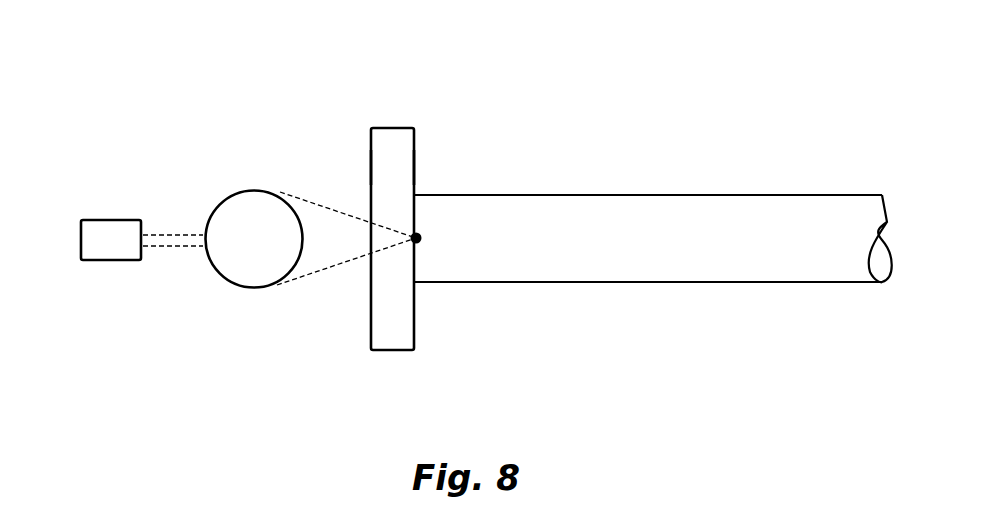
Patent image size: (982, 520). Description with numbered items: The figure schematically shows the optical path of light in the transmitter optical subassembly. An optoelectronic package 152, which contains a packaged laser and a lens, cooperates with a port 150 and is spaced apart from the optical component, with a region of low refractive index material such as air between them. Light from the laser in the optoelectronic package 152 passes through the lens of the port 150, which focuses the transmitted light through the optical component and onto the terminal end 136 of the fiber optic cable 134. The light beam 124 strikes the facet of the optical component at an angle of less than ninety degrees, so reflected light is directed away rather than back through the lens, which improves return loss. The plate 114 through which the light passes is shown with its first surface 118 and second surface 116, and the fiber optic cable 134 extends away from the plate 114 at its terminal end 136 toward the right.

The plate / target member 114 is at (391, 132).
The second surface of plate 116 is at (415, 165).
The first surface of plate 118 is at (371, 167).
The light beam 124 is at (325, 253).
The fiber optic cable 134 is at (786, 275).
The terminal end 136 is at (422, 238).
The port 150 is at (235, 202).
The optoelectronic package 152 is at (97, 222).